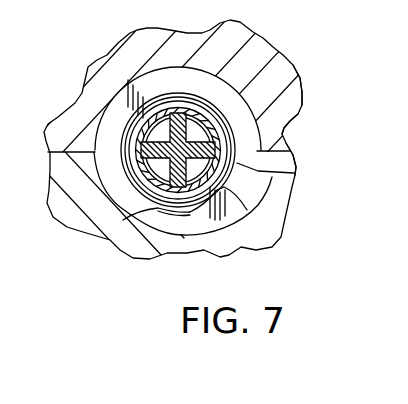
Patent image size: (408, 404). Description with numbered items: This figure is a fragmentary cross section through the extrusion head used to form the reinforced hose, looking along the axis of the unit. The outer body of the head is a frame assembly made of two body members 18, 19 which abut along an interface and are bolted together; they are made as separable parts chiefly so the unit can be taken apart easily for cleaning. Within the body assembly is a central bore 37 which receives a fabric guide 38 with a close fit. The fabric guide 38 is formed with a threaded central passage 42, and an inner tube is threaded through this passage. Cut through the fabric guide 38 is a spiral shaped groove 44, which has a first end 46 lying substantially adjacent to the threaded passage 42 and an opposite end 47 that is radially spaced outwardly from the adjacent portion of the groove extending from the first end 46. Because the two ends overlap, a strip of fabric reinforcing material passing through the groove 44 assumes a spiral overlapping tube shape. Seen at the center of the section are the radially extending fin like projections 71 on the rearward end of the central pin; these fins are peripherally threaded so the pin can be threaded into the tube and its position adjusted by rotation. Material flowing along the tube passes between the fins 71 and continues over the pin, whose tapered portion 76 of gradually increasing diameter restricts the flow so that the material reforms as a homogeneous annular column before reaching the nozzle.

The body member 18 is at (285, 57).
The body member 19 is at (241, 247).
The central bore 37 is at (289, 128).
The fabric guide 38 is at (301, 79).
The threaded central passage 42 is at (172, 108).
The spiral shaped groove 44 is at (296, 173).
The first end 46 is at (236, 196).
The opposite end 47 is at (126, 215).
The fin like projections 71 is at (193, 125).
The tapered portion 76 is at (167, 145).